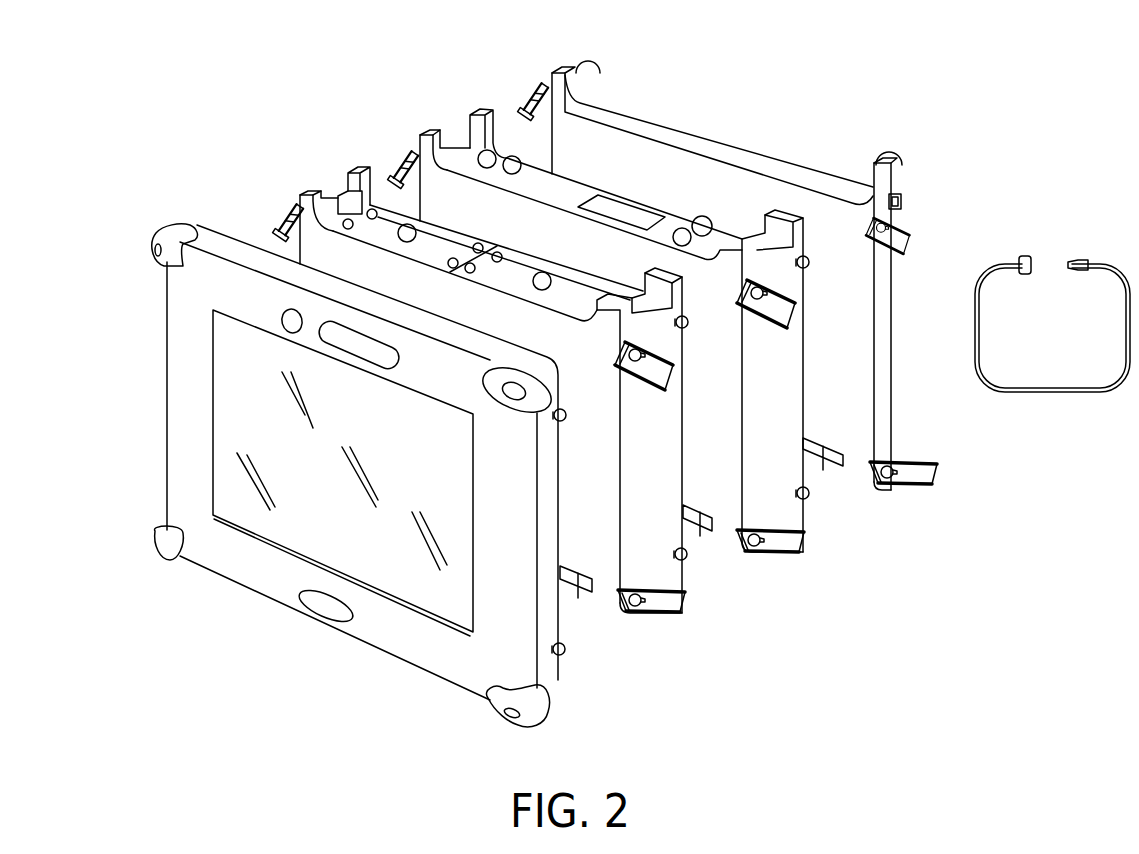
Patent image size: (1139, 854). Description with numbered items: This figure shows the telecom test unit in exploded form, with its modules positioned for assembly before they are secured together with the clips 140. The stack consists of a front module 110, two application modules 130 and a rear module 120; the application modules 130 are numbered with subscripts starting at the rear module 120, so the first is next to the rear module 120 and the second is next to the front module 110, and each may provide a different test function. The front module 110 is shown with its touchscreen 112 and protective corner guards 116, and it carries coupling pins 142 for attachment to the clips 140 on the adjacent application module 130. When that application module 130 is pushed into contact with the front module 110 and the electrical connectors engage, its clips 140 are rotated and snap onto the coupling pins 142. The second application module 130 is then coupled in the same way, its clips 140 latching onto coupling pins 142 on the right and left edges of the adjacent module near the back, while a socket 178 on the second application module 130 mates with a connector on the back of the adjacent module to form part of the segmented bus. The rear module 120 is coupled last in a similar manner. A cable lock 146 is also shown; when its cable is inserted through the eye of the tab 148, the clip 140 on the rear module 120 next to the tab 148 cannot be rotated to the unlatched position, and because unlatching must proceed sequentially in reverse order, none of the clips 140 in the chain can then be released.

The front module 110 is at (166, 417).
The touchscreen 112 is at (285, 527).
The protective corner guards 116 is at (168, 232).
The rear module 120 is at (721, 136).
The application modules 130 is at (458, 122).
The clips 140 is at (528, 94).
The coupling pins 142 is at (808, 497).
The cable lock 146 is at (1047, 393).
The tab 148 is at (903, 205).
The socket 178 is at (828, 453).